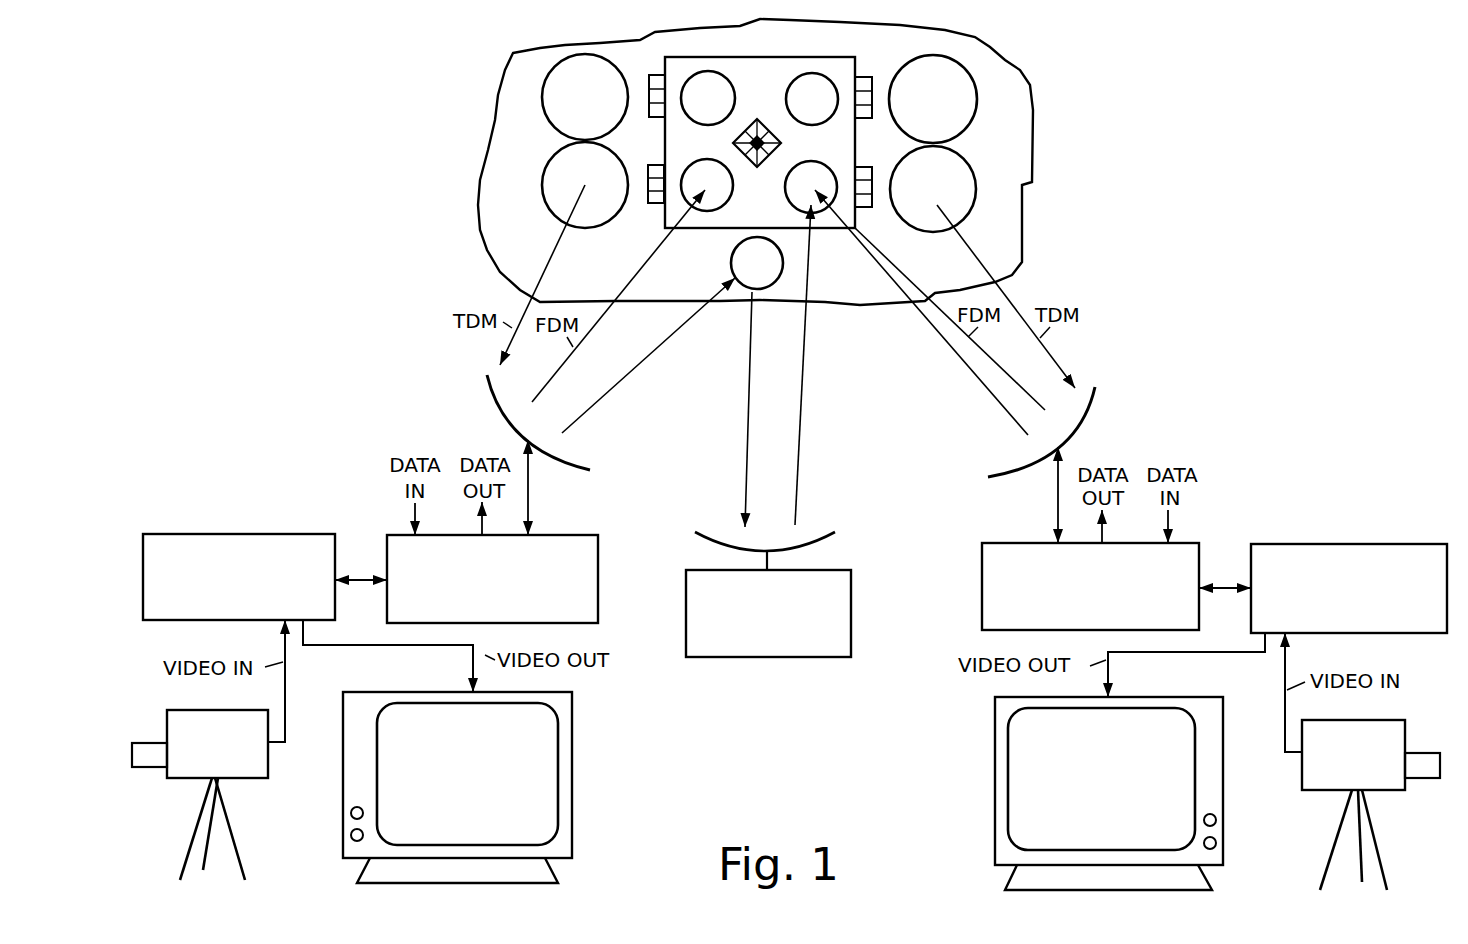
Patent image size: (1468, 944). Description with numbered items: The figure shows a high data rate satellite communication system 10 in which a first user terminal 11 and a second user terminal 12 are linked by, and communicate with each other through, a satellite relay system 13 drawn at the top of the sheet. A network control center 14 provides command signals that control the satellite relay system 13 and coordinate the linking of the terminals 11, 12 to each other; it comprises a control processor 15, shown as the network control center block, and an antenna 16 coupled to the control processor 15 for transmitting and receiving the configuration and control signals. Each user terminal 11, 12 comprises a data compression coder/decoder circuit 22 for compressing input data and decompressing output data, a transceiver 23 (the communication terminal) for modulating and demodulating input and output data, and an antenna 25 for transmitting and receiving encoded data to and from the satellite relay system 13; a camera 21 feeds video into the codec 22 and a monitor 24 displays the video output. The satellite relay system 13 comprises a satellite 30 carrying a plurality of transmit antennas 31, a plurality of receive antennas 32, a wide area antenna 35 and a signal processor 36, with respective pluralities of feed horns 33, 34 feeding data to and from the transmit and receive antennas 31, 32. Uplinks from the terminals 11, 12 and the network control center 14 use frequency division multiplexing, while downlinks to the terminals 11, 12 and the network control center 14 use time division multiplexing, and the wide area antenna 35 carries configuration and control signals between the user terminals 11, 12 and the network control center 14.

The high data rate satellite communication system 10 is at (218, 97).
The first user terminal 11 is at (216, 413).
The second user terminal 12 is at (1320, 368).
The satellite relay system 13 is at (1033, 138).
The network control center 14 is at (828, 703).
The control processor 15 is at (780, 657).
The antenna 16 is at (840, 542).
The video camera 21 is at (268, 778).
The data compression coder/decoder circuit 22 is at (257, 534).
The transceiver 23 is at (578, 536).
The video monitor 24 is at (573, 797).
The antenna 25 is at (512, 430).
The satellite 30 is at (536, 252).
The transmit antennas 31 is at (545, 118).
The receive antennas 32 is at (735, 91).
The feed horns 33 is at (655, 72).
The feed horns 34 is at (758, 167).
The wide area antenna 35 is at (731, 263).
The signal processor 36 is at (792, 55).